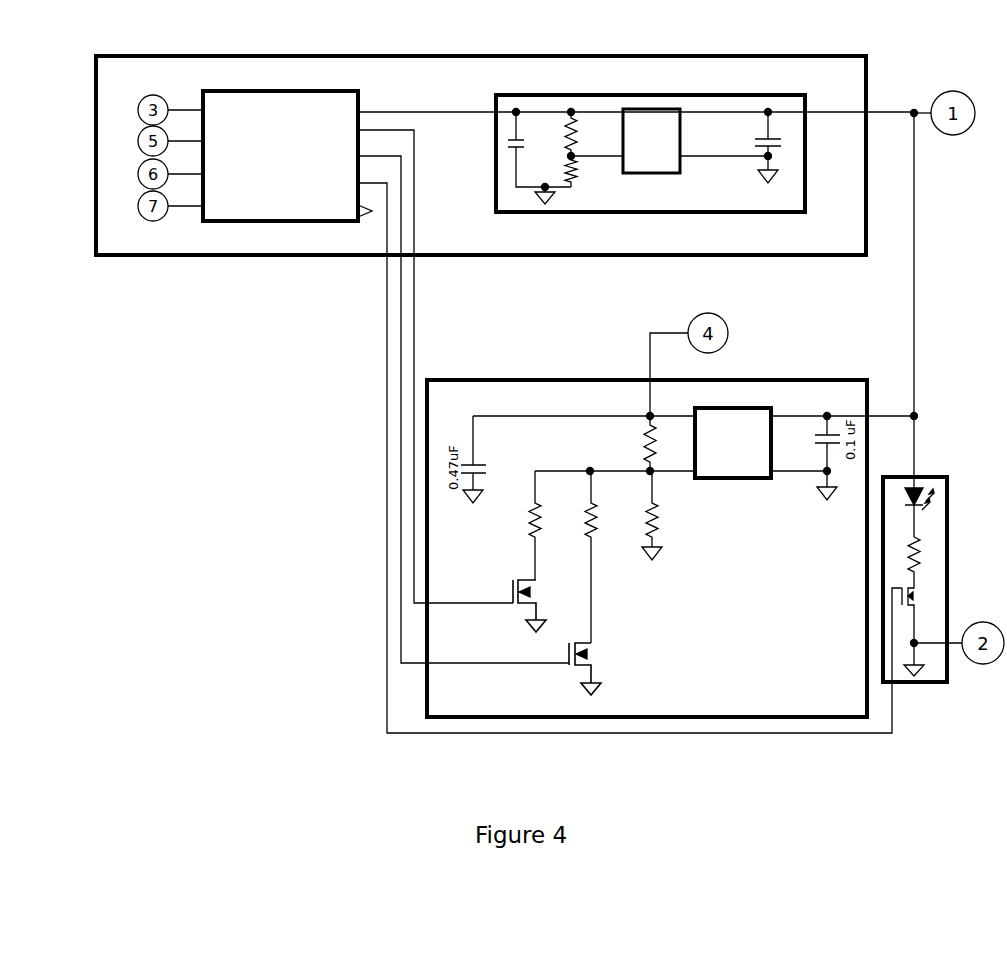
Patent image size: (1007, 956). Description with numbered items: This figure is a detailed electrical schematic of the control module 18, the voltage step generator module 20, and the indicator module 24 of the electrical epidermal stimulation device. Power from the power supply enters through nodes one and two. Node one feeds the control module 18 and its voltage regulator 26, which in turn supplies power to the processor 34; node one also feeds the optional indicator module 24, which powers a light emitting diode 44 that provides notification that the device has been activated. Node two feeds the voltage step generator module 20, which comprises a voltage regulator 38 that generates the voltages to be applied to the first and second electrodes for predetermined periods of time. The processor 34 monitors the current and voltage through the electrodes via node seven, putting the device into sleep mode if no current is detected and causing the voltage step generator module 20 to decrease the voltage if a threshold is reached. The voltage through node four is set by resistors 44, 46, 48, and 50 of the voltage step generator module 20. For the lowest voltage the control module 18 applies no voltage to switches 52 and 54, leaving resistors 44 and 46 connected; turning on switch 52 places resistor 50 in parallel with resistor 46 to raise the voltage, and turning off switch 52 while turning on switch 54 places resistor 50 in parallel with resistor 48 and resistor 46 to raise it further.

The control module 18 is at (442, 172).
The voltage step generator module 20 is at (762, 656).
The indicator module 24 is at (947, 512).
The voltage regulator 26 is at (707, 187).
The processor 34 is at (270, 166).
The voltage regulator 38 is at (723, 450).
The light emitting diode 44 is at (777, 476).
The resistor 46 is at (651, 515).
The resistor 48 is at (591, 557).
The resistor 50 is at (535, 525).
The switch 52 is at (537, 606).
The switch 54 is at (595, 669).